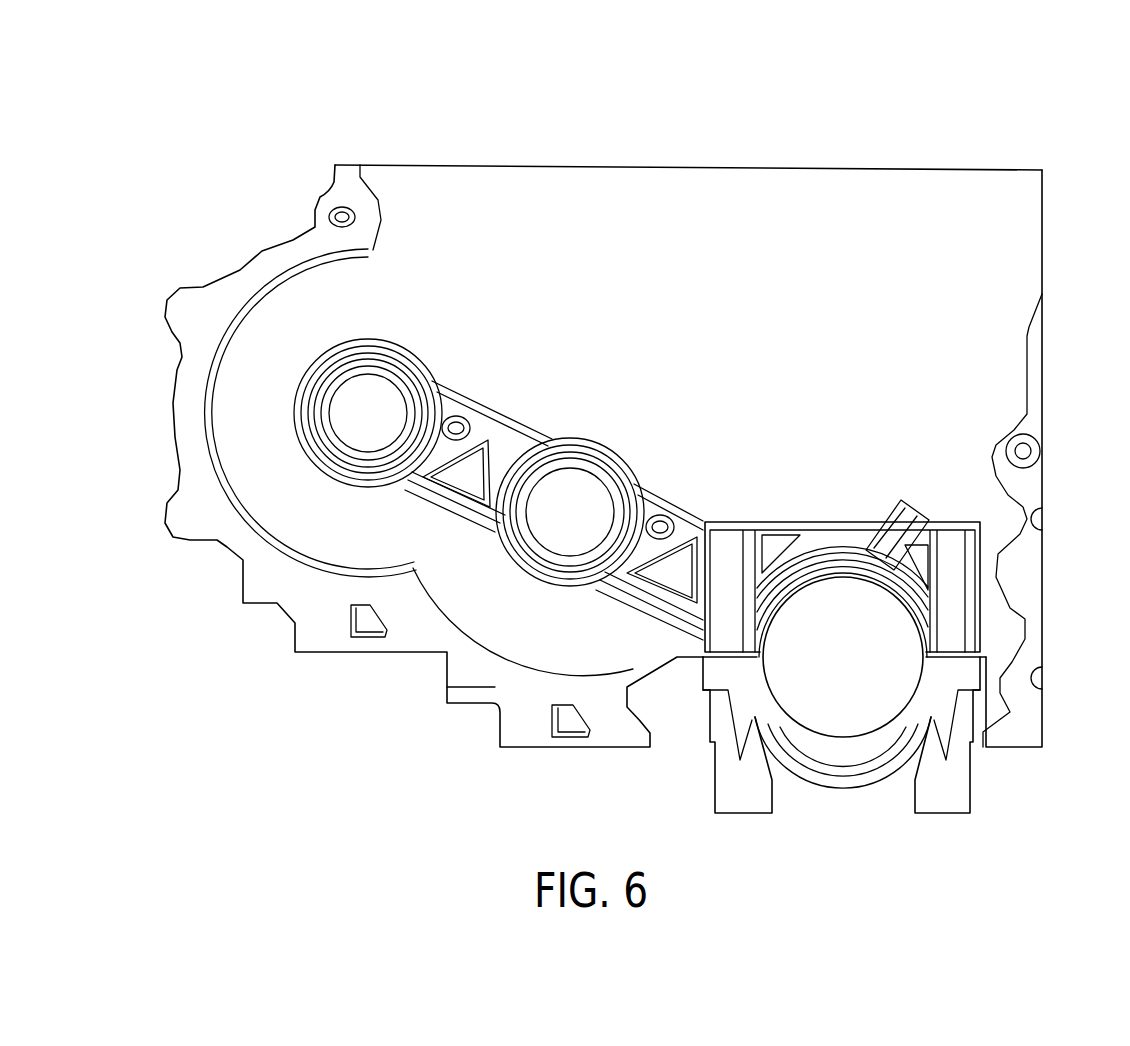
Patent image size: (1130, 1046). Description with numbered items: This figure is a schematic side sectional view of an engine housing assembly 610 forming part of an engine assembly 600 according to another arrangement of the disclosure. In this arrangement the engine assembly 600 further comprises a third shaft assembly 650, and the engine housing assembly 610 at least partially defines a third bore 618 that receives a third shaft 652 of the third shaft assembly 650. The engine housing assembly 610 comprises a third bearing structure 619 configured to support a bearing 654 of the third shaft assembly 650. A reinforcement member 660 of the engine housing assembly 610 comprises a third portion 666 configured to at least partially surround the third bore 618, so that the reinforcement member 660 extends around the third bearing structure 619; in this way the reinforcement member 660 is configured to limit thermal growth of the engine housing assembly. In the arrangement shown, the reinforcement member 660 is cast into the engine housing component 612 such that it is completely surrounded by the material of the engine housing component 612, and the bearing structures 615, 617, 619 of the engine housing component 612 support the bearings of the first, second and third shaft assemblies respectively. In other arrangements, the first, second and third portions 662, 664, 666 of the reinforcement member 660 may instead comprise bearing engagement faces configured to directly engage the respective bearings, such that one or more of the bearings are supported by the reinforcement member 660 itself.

The engine assembly 600 is at (843, 96).
The engine housing assembly 610 is at (957, 133).
The engine housing component 612 is at (920, 283).
The first bearing structure 615 is at (842, 573).
The second bearing structure 617 is at (568, 455).
The third bore 618 is at (403, 390).
The third bearing structure 619 is at (353, 363).
The third shaft assembly 650 is at (240, 223).
The third shaft 652 is at (343, 437).
The bearing 654 is at (430, 390).
The reinforcement member 660 is at (822, 535).
The first portion 662 is at (885, 562).
The second portion 664 is at (620, 460).
The third portion 666 is at (377, 488).